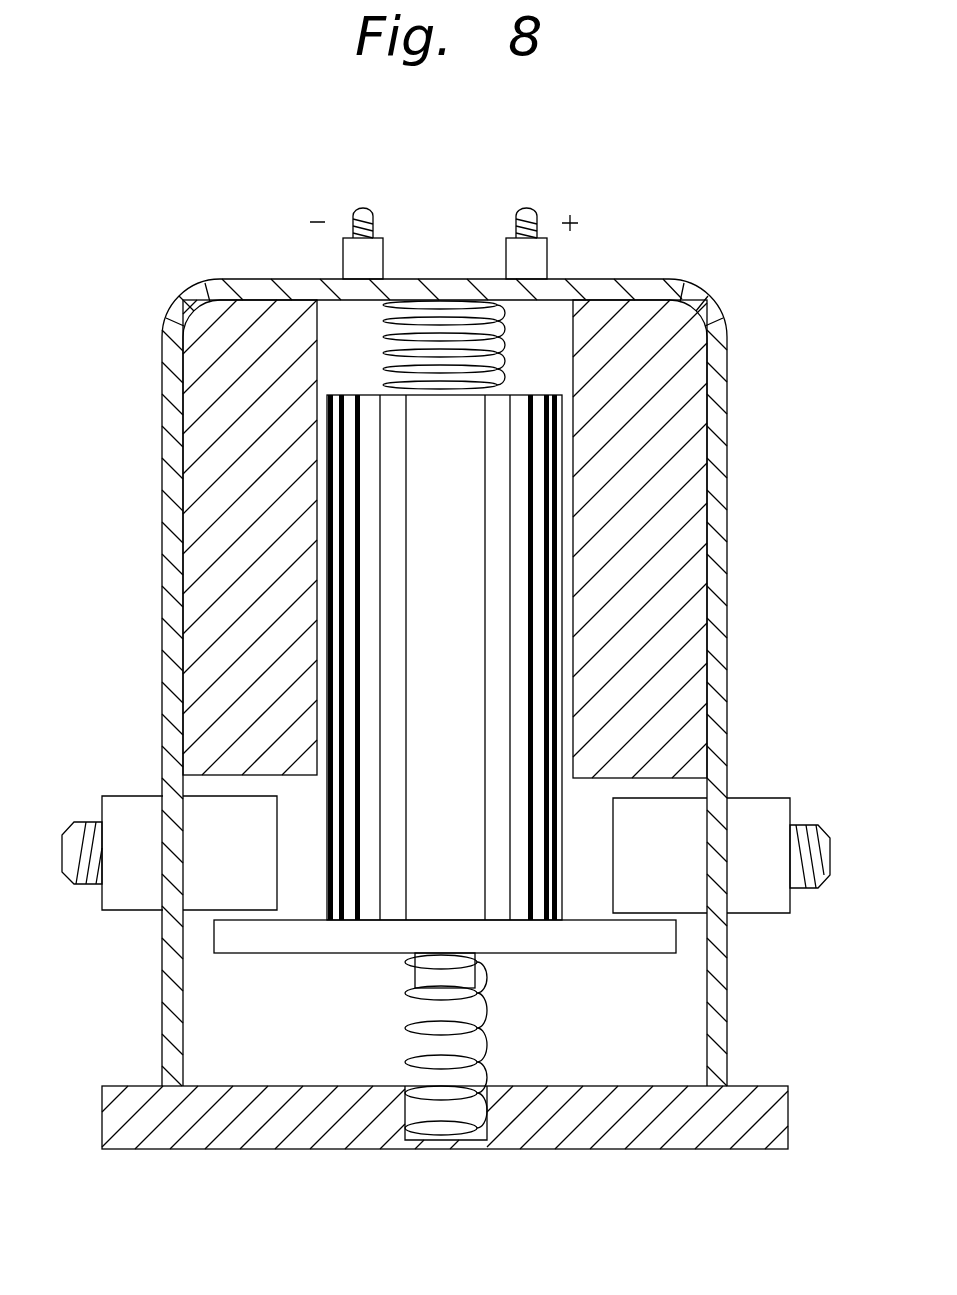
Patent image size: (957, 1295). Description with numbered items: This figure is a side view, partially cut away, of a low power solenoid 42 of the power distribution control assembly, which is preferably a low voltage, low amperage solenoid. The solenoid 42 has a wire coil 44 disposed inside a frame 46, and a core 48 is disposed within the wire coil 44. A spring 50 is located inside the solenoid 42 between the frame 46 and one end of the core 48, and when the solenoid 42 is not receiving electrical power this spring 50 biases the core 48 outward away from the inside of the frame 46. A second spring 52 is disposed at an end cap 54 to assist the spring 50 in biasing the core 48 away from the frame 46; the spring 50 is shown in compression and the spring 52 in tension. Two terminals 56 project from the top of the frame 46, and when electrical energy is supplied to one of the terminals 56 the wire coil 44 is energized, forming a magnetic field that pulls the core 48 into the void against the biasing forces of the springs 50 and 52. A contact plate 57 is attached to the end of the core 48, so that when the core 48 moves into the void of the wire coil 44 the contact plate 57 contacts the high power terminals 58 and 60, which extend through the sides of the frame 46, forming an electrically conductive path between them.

The low power solenoid 42 is at (154, 277).
The wire coil 44 is at (236, 474).
The frame 46 is at (168, 670).
The core 48 is at (512, 563).
The spring 50 is at (505, 346).
The spring 52 is at (487, 1047).
The end cap 54 is at (693, 1132).
The terminals 56 is at (505, 255).
The contact plate 57 is at (570, 940).
The high power terminal 58 is at (123, 895).
The high power terminal 60 is at (776, 899).